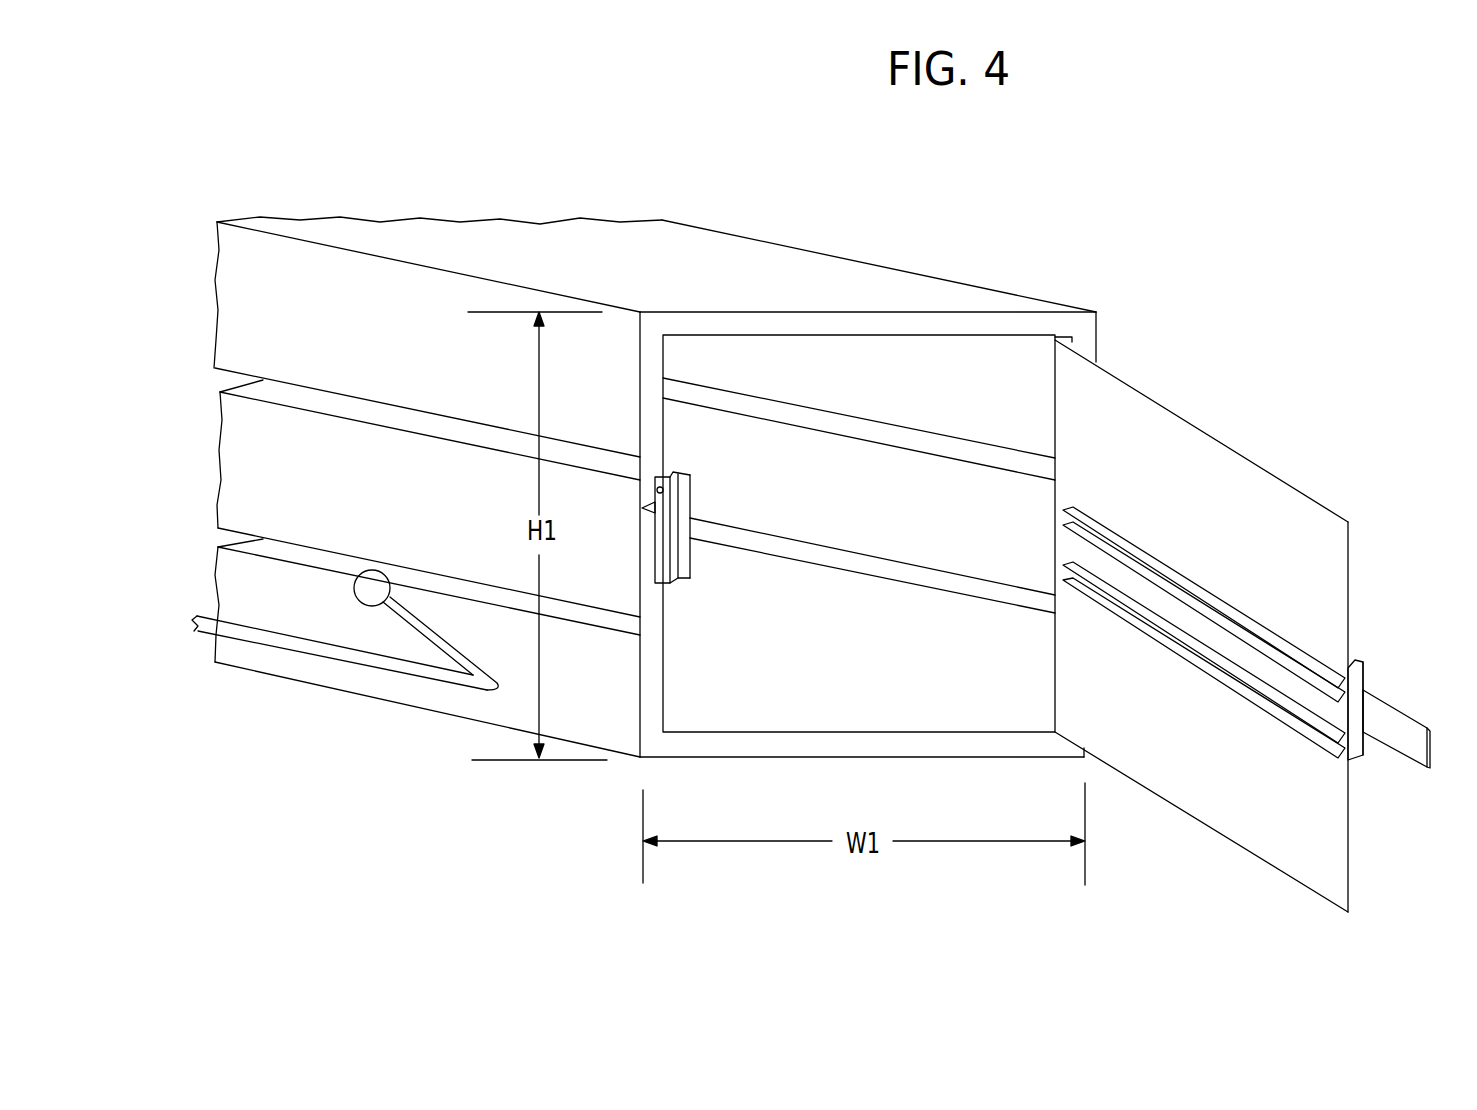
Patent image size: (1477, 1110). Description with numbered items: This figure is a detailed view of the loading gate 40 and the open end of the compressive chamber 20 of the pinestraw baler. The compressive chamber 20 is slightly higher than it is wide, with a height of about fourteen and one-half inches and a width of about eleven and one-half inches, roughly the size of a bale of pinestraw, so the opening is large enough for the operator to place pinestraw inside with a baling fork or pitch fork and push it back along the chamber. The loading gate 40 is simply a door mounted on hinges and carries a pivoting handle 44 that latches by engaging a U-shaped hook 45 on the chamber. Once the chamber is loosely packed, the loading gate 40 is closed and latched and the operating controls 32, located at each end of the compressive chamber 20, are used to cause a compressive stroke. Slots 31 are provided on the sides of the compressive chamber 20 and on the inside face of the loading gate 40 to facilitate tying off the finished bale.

The compressive chamber 20 is at (952, 258).
The slots 31 is at (267, 335).
The operating controls 32 is at (372, 600).
The loading gate 40 is at (1370, 509).
The pivoting handle 44 is at (1432, 725).
The U-shaped hook 45 is at (665, 490).